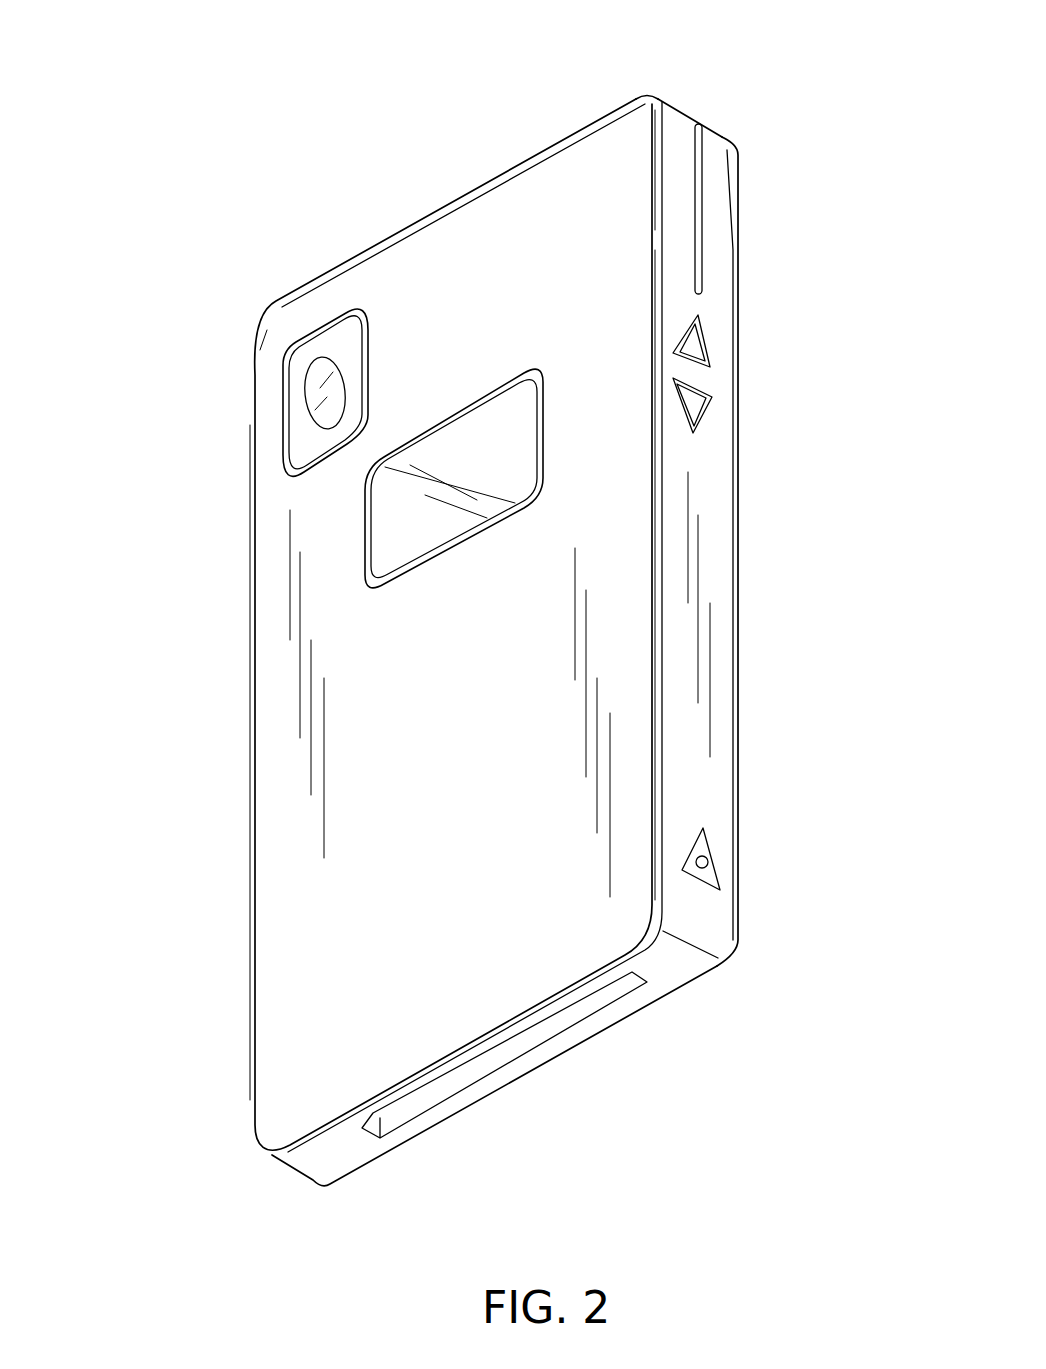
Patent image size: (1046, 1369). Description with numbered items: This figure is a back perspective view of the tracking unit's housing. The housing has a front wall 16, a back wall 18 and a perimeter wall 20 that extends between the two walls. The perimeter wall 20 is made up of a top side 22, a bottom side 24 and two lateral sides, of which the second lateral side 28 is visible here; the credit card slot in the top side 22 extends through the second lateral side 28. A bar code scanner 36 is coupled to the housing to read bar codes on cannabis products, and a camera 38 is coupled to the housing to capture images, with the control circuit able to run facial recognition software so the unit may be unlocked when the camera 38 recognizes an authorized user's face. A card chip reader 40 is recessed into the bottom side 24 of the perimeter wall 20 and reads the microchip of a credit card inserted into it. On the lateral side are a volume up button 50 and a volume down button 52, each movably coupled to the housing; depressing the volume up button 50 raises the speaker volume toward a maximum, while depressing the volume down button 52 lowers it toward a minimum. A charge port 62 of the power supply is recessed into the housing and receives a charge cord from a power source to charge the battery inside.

The front wall 16 is at (293, 818).
The back wall 18 is at (738, 488).
The perimeter wall 20 is at (702, 615).
The top side 22 is at (678, 106).
The bottom side 24 is at (670, 965).
The second lateral side 28 is at (697, 685).
The bar code scanner 36 is at (468, 407).
The camera 38 is at (325, 357).
The card chip reader 40 is at (511, 1090).
The volume up button 50 is at (700, 350).
The volume down button 52 is at (699, 403).
The charge port 62 is at (707, 867).